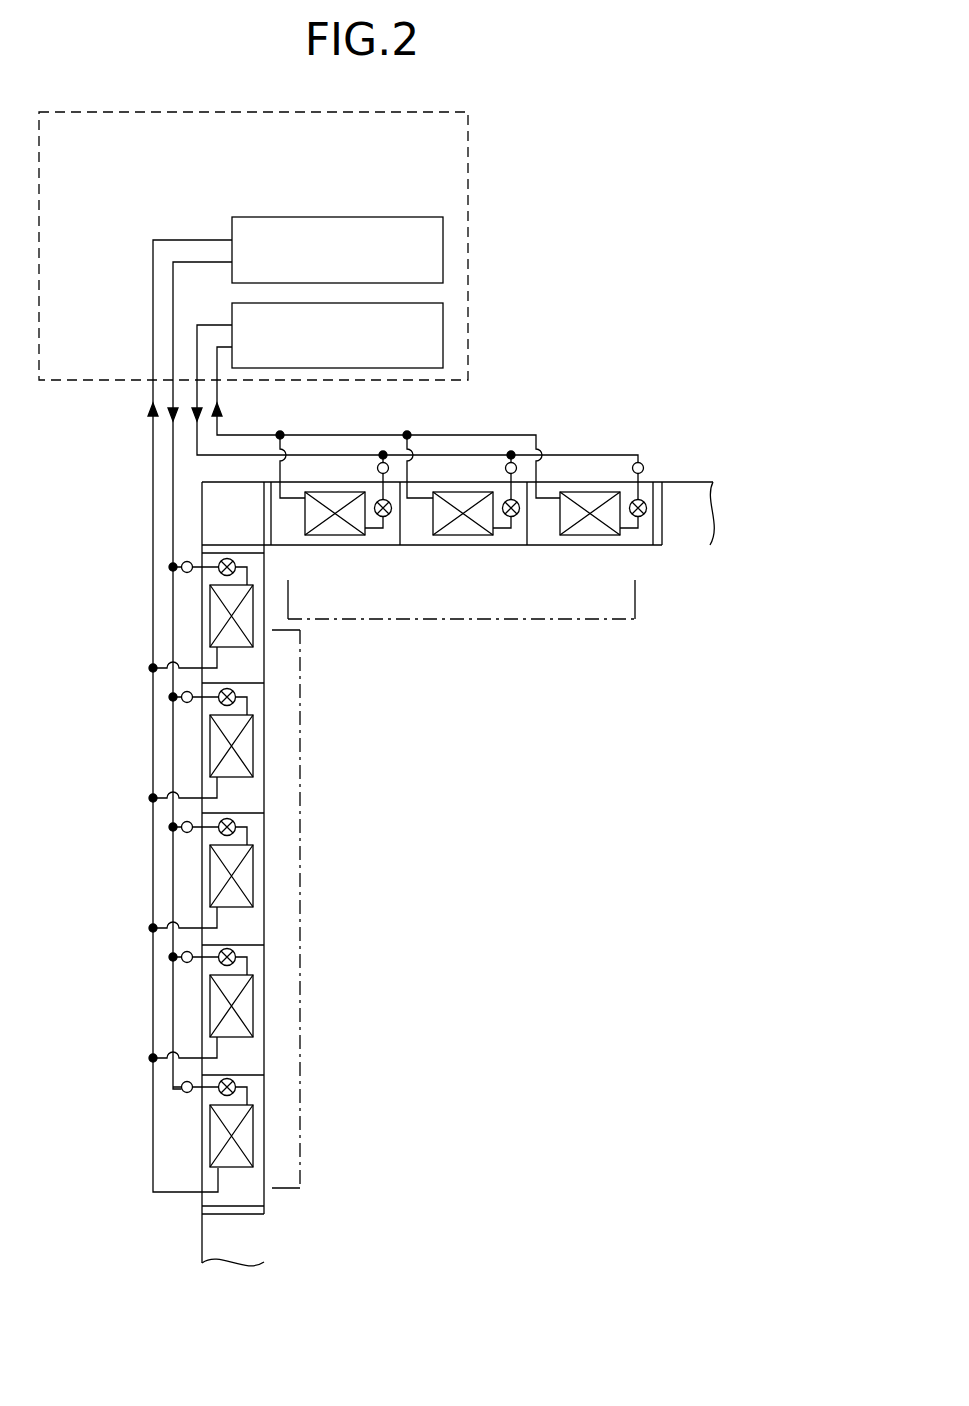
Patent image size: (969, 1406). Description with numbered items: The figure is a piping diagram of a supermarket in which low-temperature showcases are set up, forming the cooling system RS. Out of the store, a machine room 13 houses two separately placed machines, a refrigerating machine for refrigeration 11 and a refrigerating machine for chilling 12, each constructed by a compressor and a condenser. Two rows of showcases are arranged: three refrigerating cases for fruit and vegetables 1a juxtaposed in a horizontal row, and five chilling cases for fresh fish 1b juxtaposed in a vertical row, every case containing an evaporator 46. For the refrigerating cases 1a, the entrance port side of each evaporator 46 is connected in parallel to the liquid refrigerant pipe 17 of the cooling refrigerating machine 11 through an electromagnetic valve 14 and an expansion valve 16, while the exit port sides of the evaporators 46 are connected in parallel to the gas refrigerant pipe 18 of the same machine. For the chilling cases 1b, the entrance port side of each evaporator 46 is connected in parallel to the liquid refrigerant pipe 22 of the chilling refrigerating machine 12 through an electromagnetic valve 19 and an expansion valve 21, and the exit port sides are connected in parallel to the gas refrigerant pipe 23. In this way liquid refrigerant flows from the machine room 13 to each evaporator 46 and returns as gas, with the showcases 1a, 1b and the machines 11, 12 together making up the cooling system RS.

The cooling system RS is at (612, 290).
The machine room 13 is at (468, 155).
The refrigerating machine for chilling 12 is at (443, 243).
The refrigerating machine for refrigeration 11 is at (443, 325).
The gas refrigerant pipe 18 is at (470, 433).
The liquid refrigerant pipe 17 is at (583, 452).
The electromagnetic valve 14 is at (513, 464).
The expansion valve 16 is at (646, 500).
The refrigerating case for fruit and vegetables 1a is at (365, 547).
The chilling case for fresh fish 1b is at (264, 648).
The electromagnetic valve 19 is at (185, 563).
The expansion valve 21 is at (222, 574).
The liquid refrigerant pipe 22 is at (172, 1015).
The gas refrigerant pipe 23 is at (153, 1176).
The evaporator 46 is at (335, 537).